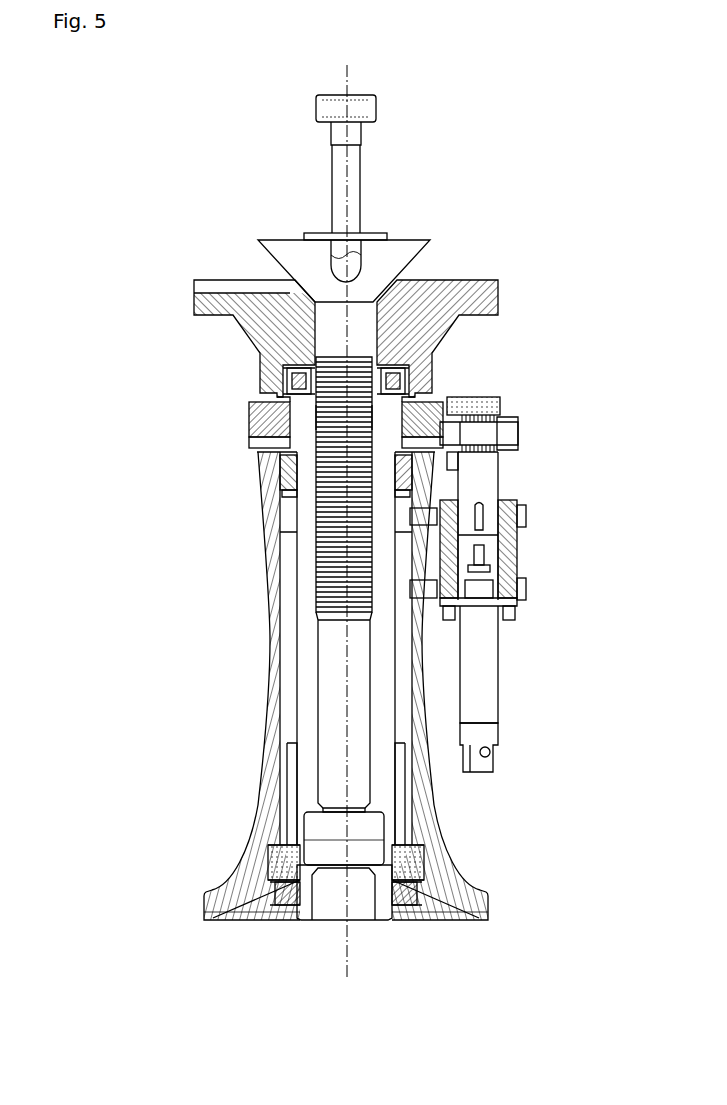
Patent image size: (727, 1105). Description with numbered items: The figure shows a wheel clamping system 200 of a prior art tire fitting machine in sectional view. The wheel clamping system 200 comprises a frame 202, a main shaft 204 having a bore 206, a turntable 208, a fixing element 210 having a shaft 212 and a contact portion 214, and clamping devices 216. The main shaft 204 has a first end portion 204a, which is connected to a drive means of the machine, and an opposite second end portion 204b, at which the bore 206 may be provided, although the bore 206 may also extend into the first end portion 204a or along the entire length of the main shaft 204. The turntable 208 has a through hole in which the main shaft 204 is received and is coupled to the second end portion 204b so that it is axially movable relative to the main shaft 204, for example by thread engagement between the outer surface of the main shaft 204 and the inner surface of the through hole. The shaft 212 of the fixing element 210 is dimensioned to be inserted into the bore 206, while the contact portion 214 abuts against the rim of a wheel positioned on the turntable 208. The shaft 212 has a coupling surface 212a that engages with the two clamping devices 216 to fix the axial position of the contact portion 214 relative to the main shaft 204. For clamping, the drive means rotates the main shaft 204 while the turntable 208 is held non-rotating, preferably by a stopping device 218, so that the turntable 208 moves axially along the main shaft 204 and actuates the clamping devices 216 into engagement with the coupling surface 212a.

The wheel clamping system 200 is at (226, 71).
The frame 202 is at (275, 683).
The main shaft 204 is at (300, 766).
The first end portion 204a is at (407, 902).
The second end portion 204b is at (287, 455).
The bore 206 is at (360, 747).
The turntable 208 is at (418, 340).
The fixing element 210 is at (417, 181).
The shaft 212 is at (362, 347).
The coupling surface 212a is at (318, 417).
The contact portion 214 is at (389, 257).
The clamping device 216 is at (278, 372).
The stopping device 218 is at (553, 422).